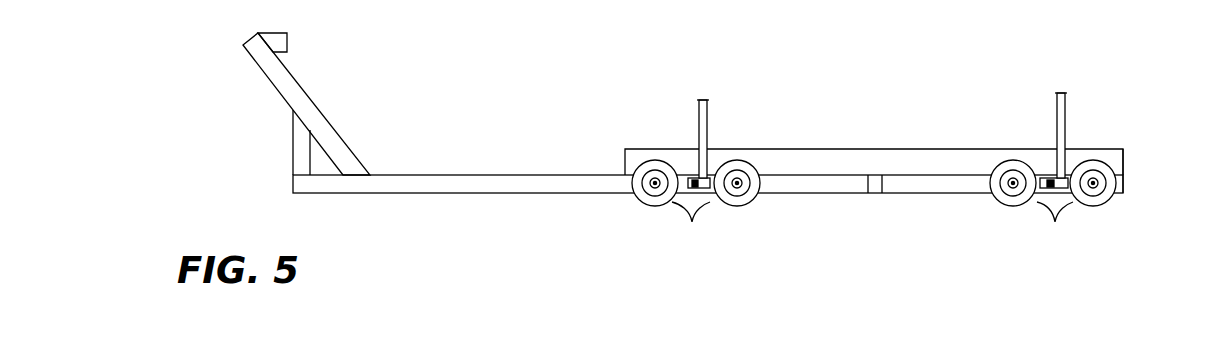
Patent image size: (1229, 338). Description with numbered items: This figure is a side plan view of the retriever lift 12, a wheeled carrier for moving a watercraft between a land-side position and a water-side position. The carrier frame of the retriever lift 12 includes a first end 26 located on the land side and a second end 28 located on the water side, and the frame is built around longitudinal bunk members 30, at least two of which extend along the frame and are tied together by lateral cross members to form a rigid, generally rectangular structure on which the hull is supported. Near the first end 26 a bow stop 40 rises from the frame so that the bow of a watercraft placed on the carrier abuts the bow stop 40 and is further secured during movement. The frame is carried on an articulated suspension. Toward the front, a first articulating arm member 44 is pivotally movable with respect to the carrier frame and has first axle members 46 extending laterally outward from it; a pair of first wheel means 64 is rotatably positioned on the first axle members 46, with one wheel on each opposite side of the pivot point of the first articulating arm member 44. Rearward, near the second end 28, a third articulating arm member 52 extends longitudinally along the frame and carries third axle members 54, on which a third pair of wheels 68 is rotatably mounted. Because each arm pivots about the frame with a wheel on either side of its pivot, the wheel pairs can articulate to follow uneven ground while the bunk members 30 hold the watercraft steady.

The retriever lift 12 is at (501, 50).
The first end 26 is at (292, 193).
The second end 28 is at (1123, 178).
The bunk members 30 is at (818, 187).
The bow stop 40 is at (285, 68).
The first articulating arm member 44 is at (685, 178).
The first axle members 46 is at (738, 207).
The third articulating arm member 52 is at (1043, 177).
The third axle members 54 is at (1013, 188).
The first wheel means 64 is at (691, 229).
The third pair of wheels 68 is at (1055, 230).